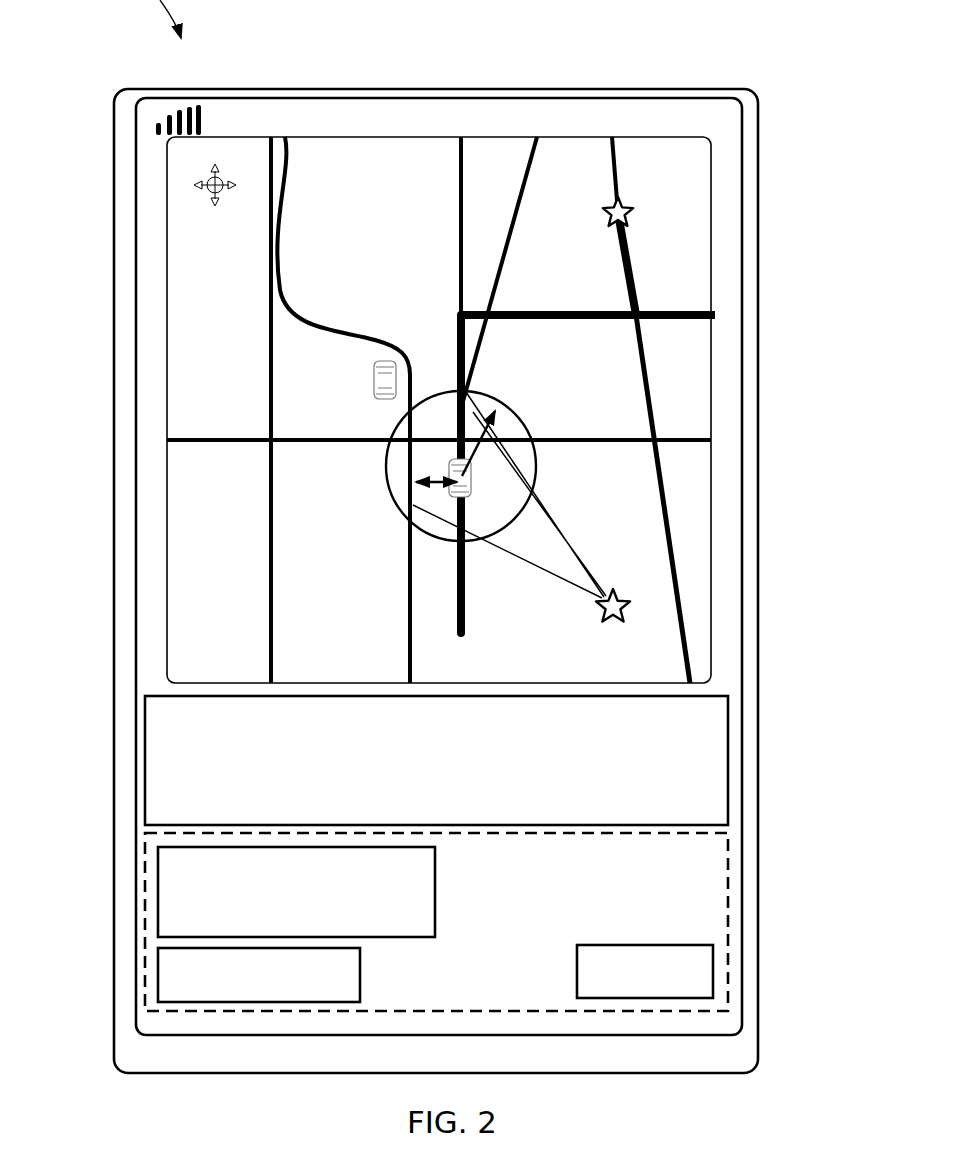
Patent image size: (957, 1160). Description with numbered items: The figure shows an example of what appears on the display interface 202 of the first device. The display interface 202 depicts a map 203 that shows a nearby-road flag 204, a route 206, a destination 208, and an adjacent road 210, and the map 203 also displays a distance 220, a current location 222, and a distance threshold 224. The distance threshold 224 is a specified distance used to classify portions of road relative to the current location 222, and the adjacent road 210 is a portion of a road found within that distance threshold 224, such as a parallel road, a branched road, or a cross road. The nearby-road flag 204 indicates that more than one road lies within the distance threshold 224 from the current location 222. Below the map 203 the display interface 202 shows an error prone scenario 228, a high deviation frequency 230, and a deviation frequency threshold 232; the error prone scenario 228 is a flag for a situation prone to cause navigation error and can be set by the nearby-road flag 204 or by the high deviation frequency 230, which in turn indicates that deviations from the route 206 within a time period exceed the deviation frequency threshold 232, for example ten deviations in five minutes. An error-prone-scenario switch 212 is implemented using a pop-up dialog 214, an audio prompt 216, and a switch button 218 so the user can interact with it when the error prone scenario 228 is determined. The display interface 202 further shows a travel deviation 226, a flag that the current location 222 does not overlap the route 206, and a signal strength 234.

The display interface 202 is at (427, 155).
The map 203 is at (170, 270).
The nearby-road flag 204 is at (631, 603).
The route 206 is at (638, 283).
The destination 208 is at (636, 209).
The adjacent road 210 is at (400, 428).
The error-prone-scenario switch 212 is at (632, 982).
The pop-up dialog 214 is at (312, 902).
The audio prompt 216 is at (283, 985).
The switch button 218 is at (628, 984).
The distance 220 is at (410, 480).
The current location 222 is at (470, 481).
The distance threshold 224 is at (500, 407).
The travel deviation 226 is at (380, 381).
The error prone scenario 228 is at (166, 710).
The high deviation frequency 230 is at (299, 744).
The deviation frequency threshold 232 is at (166, 768).
The signal strength 234 is at (173, 113).